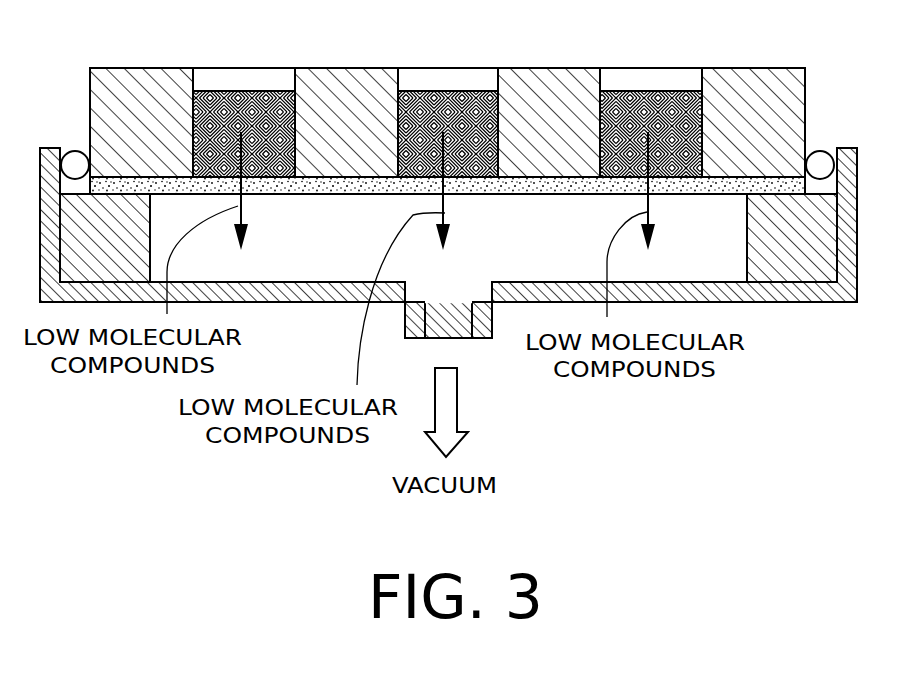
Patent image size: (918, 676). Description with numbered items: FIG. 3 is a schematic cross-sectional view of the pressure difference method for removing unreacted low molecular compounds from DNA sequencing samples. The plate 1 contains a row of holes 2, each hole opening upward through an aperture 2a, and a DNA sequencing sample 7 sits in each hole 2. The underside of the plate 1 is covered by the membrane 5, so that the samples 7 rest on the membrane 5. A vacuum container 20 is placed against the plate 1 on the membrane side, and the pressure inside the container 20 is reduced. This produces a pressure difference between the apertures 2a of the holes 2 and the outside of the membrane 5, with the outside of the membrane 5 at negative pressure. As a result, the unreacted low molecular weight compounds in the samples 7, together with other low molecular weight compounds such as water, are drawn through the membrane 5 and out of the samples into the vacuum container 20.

The plate 1 is at (447, 99).
The hole 2 is at (277, 90).
The aperture 2a is at (249, 80).
The DNA sequencing sample 7 is at (210, 102).
The membrane 5 is at (720, 190).
The vacuum container 20 is at (788, 290).